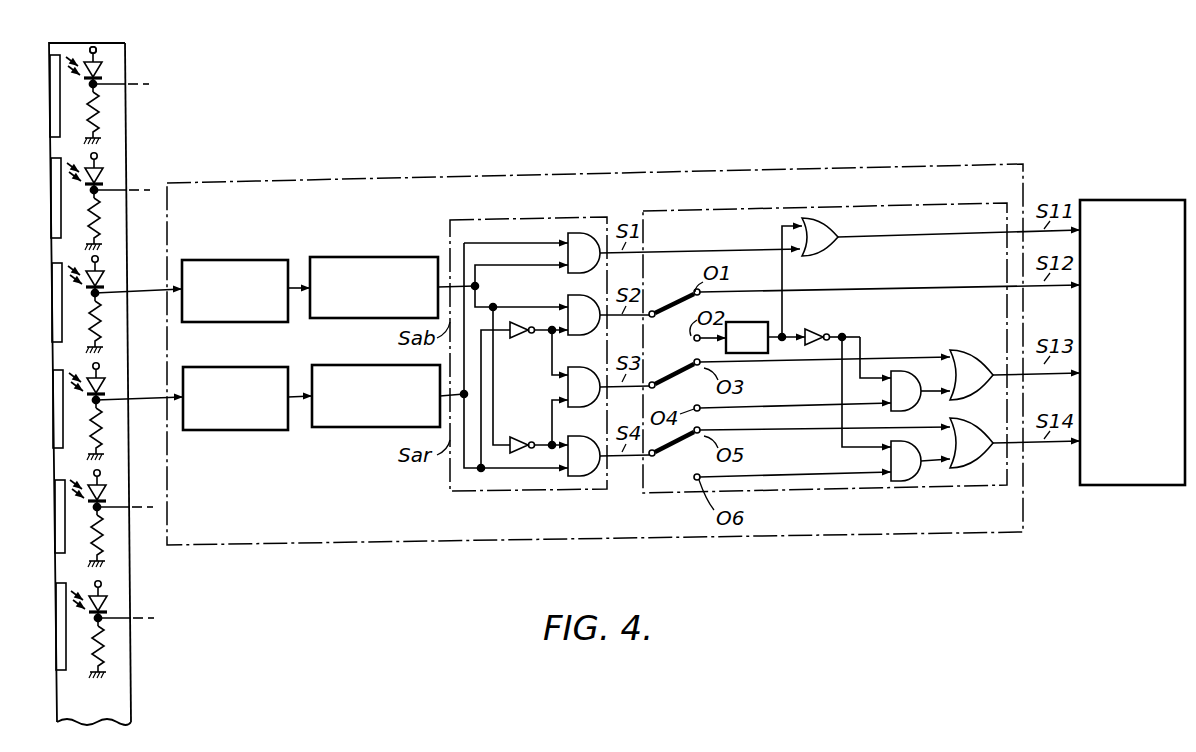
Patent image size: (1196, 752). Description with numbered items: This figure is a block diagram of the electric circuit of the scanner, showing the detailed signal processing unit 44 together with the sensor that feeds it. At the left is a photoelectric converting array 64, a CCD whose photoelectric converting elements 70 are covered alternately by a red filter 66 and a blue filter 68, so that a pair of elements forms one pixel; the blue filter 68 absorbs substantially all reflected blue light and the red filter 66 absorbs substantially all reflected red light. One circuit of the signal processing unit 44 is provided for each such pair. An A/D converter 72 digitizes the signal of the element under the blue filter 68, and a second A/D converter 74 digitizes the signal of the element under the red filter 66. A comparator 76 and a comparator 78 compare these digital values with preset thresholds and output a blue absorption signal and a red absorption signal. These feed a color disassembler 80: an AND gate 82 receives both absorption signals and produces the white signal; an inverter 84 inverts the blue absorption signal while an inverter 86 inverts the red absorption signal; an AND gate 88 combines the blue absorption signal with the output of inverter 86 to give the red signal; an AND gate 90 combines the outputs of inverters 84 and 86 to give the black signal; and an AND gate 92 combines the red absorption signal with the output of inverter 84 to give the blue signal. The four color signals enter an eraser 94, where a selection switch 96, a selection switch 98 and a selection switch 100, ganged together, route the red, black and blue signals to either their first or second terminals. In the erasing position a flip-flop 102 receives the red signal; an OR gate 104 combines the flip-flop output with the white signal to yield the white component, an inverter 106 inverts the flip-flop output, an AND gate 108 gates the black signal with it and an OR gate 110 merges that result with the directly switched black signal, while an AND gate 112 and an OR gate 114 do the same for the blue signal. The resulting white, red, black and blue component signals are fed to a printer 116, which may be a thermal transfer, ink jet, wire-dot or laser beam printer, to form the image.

The signal processing unit 44 is at (893, 164).
The photoelectric converting array 64 is at (108, 51).
The red filter 66 is at (56, 197).
The blue filter 68 is at (55, 102).
The photoelectric converting element 70 is at (101, 68).
The A/D converter 72 is at (226, 262).
The A/D converter 74 is at (228, 369).
The comparator 76 is at (368, 259).
The comparator 78 is at (352, 367).
The color disassembler 80 is at (477, 218).
The AND gate 82 is at (583, 236).
The inverter 84 is at (521, 436).
The inverter 86 is at (522, 340).
The AND gate 88 is at (572, 300).
The AND gate 90 is at (566, 387).
The AND gate 92 is at (594, 474).
The eraser 94 is at (702, 210).
The selection switch 96 is at (674, 305).
The selection switch 98 is at (672, 378).
The selection switch 100 is at (676, 456).
The flip-flop 102 is at (745, 322).
The OR gate 104 is at (828, 228).
The inverter 106 is at (816, 330).
The AND gate 108 is at (900, 372).
The OR gate 110 is at (968, 355).
The AND gate 112 is at (904, 480).
The OR gate 114 is at (965, 465).
The printer 116 is at (1128, 486).